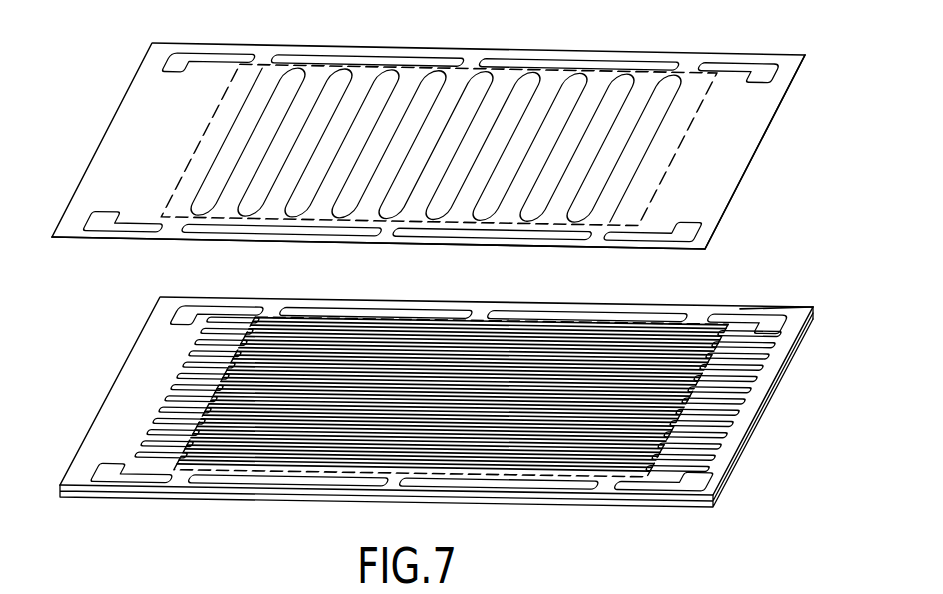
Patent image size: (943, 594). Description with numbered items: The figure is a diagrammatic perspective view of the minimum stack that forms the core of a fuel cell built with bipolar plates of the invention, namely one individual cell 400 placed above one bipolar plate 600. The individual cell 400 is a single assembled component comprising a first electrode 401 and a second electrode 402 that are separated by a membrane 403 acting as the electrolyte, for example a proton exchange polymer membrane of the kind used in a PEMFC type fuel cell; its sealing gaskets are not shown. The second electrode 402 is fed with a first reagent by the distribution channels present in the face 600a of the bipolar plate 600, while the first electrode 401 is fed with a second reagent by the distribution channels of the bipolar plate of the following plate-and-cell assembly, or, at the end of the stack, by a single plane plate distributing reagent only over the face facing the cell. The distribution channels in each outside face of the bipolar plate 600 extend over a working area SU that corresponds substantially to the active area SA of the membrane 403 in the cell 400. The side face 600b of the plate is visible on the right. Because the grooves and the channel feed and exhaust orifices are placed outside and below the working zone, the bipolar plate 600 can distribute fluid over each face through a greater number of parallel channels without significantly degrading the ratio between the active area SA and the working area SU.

The individual cell 400 is at (103, 118).
The first electrode 401 is at (470, 88).
The second electrode 402 is at (514, 248).
The membrane 403 is at (735, 147).
The active area SA is at (689, 71).
The bipolar plate 600 is at (103, 372).
The face of the bipolar plate 600a is at (793, 308).
The side face of second separator plate 600b is at (788, 372).
The working area SU is at (700, 322).